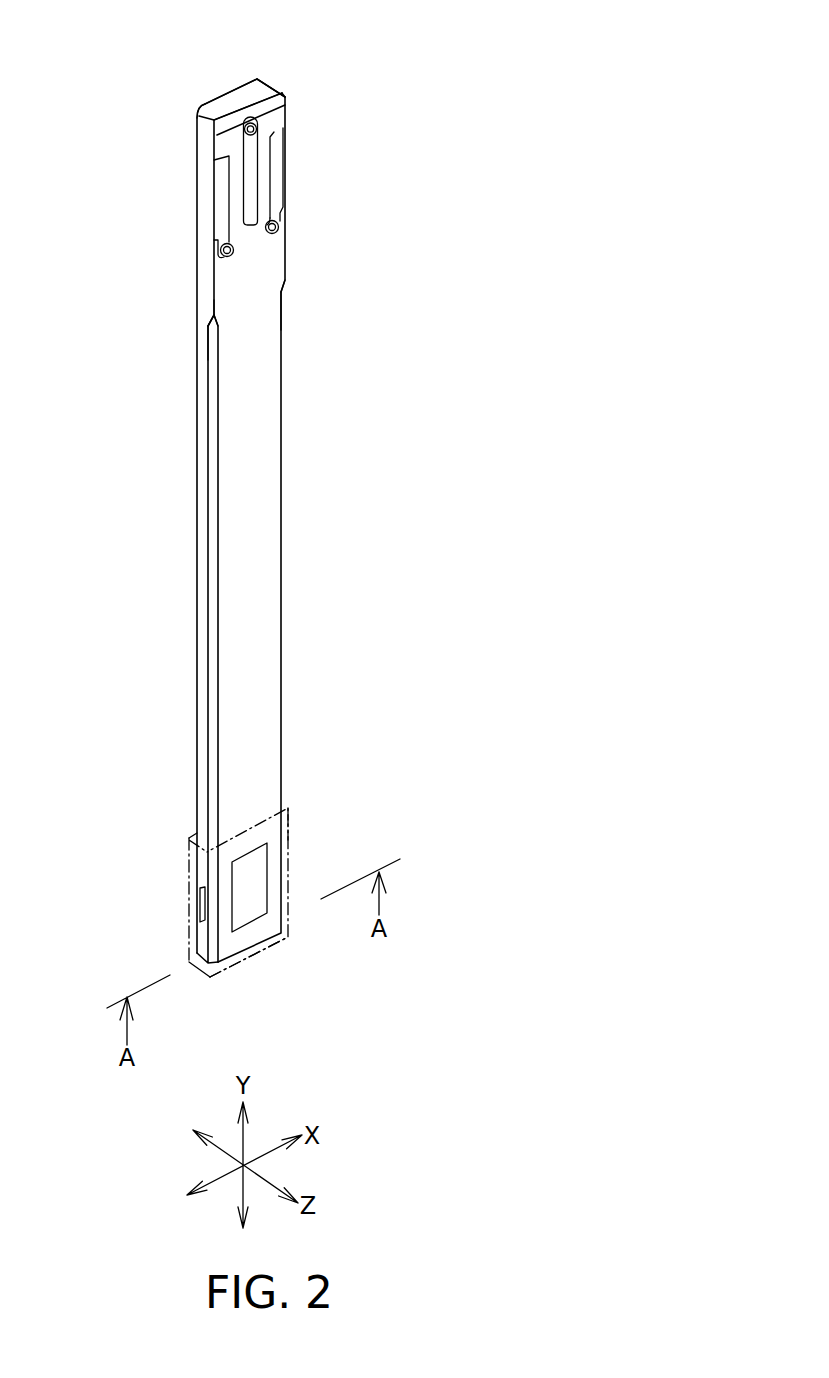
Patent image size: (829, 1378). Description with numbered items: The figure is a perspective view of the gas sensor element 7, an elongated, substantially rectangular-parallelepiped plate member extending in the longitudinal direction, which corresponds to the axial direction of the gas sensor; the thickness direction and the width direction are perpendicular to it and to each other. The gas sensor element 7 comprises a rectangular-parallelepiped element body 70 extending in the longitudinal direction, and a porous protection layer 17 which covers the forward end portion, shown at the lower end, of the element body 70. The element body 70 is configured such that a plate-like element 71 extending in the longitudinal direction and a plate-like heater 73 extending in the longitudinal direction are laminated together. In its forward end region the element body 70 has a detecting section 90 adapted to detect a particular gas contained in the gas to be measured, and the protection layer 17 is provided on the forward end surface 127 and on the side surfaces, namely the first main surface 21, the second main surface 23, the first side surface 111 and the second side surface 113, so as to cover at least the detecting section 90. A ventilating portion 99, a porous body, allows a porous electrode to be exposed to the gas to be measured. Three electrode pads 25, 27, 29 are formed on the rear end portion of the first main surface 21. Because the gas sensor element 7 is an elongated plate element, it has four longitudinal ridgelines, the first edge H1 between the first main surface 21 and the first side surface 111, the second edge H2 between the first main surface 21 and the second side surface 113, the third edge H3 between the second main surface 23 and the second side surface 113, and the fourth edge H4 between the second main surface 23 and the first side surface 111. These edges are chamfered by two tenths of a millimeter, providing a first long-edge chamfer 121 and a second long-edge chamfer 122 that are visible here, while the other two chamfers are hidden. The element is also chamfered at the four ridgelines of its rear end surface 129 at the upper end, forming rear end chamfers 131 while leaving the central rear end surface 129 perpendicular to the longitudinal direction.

The gas sensor element 7 is at (245, 481).
The porous protection layer 17 is at (290, 823).
The first main surface 21 is at (310, 529).
The second main surface 23 is at (158, 521).
The electrode pad 25 is at (222, 197).
The electrode pad 27 is at (252, 148).
The electrode pad 29 is at (278, 167).
The element body 70 is at (219, 521).
The element 71 is at (250, 575).
The heater 73 is at (195, 608).
The detecting section 90 is at (227, 900).
The ventilating portion 99 is at (253, 882).
The first side surface 111 is at (205, 305).
The second side surface 113 is at (285, 220).
The first long-edge chamfer 121 is at (212, 343).
The second long-edge chamfer 122 is at (282, 310).
The forward end surface 127 is at (262, 955).
The rear end surface 129 is at (230, 102).
The rear end chamfers 131 is at (270, 98).
The first edge H1 is at (213, 282).
The second edge H2 is at (287, 263).
The third edge H3 is at (282, 58).
The fourth edge H4 is at (188, 128).